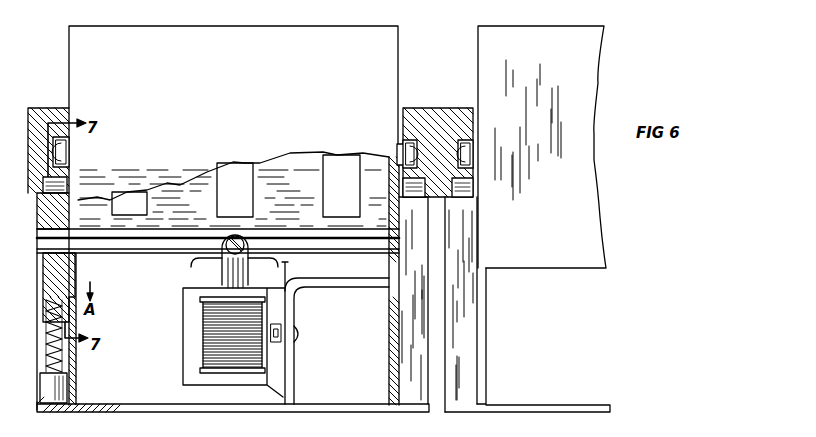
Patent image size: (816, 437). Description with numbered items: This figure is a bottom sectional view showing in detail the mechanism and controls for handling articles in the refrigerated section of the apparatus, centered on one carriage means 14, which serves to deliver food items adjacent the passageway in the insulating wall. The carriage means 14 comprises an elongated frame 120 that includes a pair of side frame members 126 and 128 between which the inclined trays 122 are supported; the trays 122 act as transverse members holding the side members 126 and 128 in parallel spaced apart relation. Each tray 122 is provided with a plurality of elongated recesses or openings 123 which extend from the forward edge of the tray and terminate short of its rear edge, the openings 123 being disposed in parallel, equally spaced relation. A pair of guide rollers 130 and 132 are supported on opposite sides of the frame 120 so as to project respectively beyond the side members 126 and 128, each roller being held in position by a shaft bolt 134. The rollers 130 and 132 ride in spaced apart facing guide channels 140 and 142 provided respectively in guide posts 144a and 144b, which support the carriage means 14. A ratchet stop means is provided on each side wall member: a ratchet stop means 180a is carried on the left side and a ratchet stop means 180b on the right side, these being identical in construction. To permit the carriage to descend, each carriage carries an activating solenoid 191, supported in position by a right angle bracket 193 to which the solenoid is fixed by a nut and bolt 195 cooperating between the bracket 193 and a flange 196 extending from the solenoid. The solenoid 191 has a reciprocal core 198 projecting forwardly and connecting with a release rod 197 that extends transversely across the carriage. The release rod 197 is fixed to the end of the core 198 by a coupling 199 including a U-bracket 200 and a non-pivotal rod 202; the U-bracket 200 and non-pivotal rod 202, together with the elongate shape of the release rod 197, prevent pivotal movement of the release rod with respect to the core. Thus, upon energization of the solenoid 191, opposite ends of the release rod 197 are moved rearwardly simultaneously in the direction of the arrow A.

The carriage means 14 is at (403, 57).
The elongated frame 120 is at (208, 65).
The inclined tray 122 is at (282, 160).
The elongated recesses or openings 123 is at (350, 197).
The side frame member 126 is at (388, 176).
The side frame member 128 is at (72, 199).
The guide roller 130 is at (399, 138).
The guide roller 132 is at (68, 155).
The shaft bolt 134 is at (408, 142).
The guide channel 140 is at (418, 148).
The guide channel 142 is at (55, 108).
The guide post 144a is at (66, 198).
The guide post 144b is at (447, 108).
The ratchet stop means 180a is at (32, 387).
The ratchet stop means 180b is at (437, 331).
The activating solenoid 191 is at (192, 340).
The right angle bracket 193 is at (329, 289).
The nut and bolt 195 is at (298, 340).
The flange 196 is at (283, 290).
The release rod 197 is at (115, 254).
The reciprocal core 198 is at (220, 272).
The coupling 199 is at (178, 254).
The U-bracket 200 is at (248, 240).
The non-pivotal rod 202 is at (272, 255).